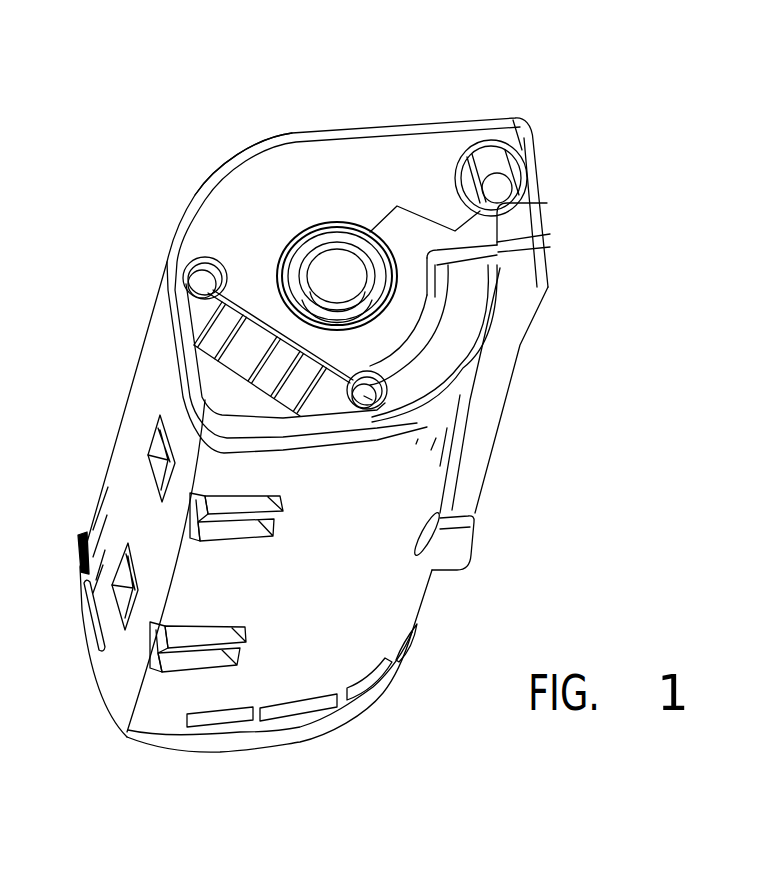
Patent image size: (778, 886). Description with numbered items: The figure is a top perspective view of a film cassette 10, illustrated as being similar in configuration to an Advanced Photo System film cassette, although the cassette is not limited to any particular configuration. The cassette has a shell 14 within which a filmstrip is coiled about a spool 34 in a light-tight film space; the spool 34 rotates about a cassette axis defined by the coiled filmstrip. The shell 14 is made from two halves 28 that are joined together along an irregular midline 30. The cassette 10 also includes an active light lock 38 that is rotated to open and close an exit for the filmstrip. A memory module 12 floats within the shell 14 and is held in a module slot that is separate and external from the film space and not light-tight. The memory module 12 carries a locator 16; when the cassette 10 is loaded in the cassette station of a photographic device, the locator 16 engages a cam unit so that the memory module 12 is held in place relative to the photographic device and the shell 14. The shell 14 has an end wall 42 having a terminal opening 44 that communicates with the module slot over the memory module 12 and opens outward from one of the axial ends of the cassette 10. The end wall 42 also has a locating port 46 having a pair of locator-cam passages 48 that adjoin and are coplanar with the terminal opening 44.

The film cassette 10 is at (432, 70).
The memory module 12 is at (198, 318).
The shell 14 is at (102, 492).
The locator 16 is at (212, 262).
The halves 28 is at (520, 118).
The irregular midline 30 is at (370, 232).
The spool 34 is at (322, 228).
The active light lock 38 is at (543, 205).
The end wall 42 is at (227, 186).
The terminal opening 44 is at (211, 375).
The locating port 46 is at (207, 258).
The locator-cam passages 48 is at (380, 420).